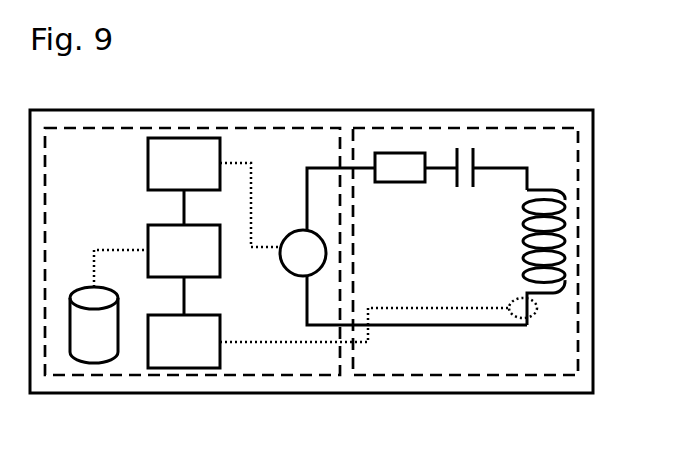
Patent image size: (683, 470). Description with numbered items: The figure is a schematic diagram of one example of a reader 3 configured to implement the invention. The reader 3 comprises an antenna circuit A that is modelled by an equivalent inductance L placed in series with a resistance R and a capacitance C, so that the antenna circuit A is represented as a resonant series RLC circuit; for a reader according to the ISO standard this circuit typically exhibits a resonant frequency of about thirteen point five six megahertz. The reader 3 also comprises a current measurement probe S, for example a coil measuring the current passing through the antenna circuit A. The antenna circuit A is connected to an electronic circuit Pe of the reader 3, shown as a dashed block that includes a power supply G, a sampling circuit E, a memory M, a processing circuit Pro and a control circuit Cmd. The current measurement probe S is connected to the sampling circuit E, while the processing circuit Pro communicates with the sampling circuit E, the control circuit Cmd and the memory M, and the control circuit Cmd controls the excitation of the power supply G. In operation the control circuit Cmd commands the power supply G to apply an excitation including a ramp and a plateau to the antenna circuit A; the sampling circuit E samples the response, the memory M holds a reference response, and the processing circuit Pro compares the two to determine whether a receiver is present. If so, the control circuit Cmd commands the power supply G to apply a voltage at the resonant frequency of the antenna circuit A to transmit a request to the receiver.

The reader 3 is at (311, 394).
The electronic circuit Pe is at (221, 128).
The antenna circuit A is at (465, 128).
The control circuit Cmd is at (212, 181).
The processing circuit Pro is at (206, 268).
The sampling circuit E is at (193, 360).
The memory M is at (104, 347).
The power supply G is at (288, 273).
The resistance R is at (400, 183).
The capacitance C is at (465, 170).
The equivalent inductance L is at (566, 241).
The current measurement probe S is at (535, 313).